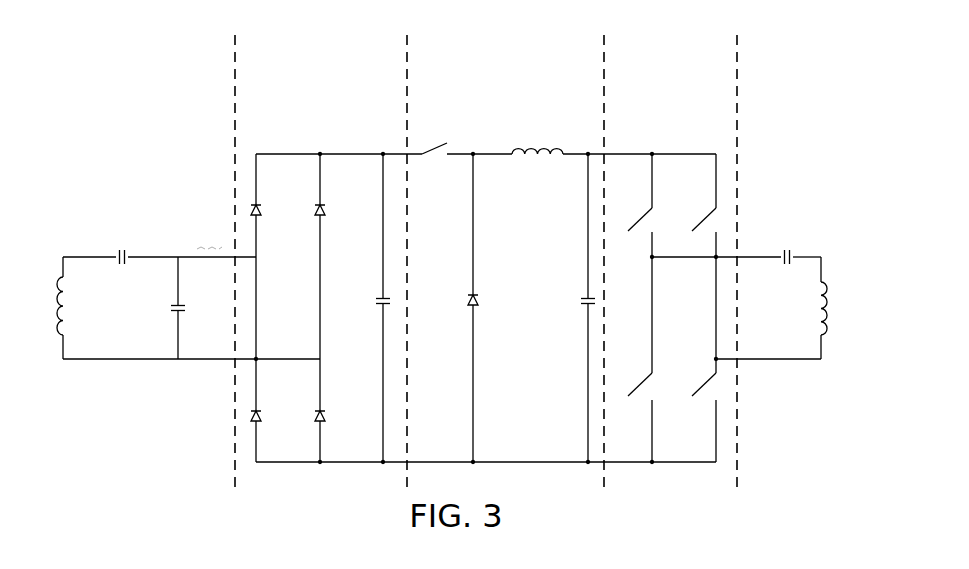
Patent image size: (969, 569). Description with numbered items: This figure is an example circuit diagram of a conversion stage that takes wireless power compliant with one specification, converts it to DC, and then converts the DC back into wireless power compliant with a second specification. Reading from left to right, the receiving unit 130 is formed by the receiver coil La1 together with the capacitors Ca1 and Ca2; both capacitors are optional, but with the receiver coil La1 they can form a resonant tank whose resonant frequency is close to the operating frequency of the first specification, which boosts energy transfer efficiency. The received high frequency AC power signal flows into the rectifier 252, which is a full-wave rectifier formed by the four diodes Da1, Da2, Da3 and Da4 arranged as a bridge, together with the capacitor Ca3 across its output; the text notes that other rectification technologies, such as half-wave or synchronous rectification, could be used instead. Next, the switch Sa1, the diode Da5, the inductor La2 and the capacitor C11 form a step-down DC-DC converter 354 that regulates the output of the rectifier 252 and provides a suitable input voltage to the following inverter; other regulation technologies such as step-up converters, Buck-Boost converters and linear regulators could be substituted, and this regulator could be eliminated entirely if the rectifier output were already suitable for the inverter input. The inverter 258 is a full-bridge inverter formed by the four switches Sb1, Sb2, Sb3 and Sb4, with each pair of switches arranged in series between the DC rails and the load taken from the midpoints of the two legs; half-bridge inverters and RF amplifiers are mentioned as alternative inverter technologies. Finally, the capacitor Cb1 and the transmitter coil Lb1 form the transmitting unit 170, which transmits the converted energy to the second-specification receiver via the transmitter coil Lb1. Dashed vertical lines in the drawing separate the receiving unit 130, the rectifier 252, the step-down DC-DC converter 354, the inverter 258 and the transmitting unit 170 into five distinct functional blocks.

The receiving unit 130 is at (188, 207).
The rectifier 252 is at (483, 260).
The step-down DC-DC converter 354 is at (565, 260).
The inverter 258 is at (714, 260).
The transmitting unit 170 is at (817, 207).
The receiver coil La1 is at (80, 306).
The capacitor Ca1 is at (121, 246).
The capacitor Ca2 is at (197, 308).
The diode Da1 is at (277, 256).
The diode Da2 is at (341, 256).
The diode Da3 is at (277, 410).
The diode Da4 is at (341, 410).
The capacitor Ca3 is at (363, 308).
The switch Sa1 is at (430, 163).
The inductor La2 is at (537, 137).
The diode Da5 is at (494, 308).
The capacitor C11 is at (569, 308).
The switch Sb1 is at (629, 205).
The switch Sb2 is at (694, 256).
The switch Sb3 is at (632, 359).
The switch Sb4 is at (696, 410).
The capacitor Cb1 is at (787, 246).
The transmitter coil Lb1 is at (842, 308).